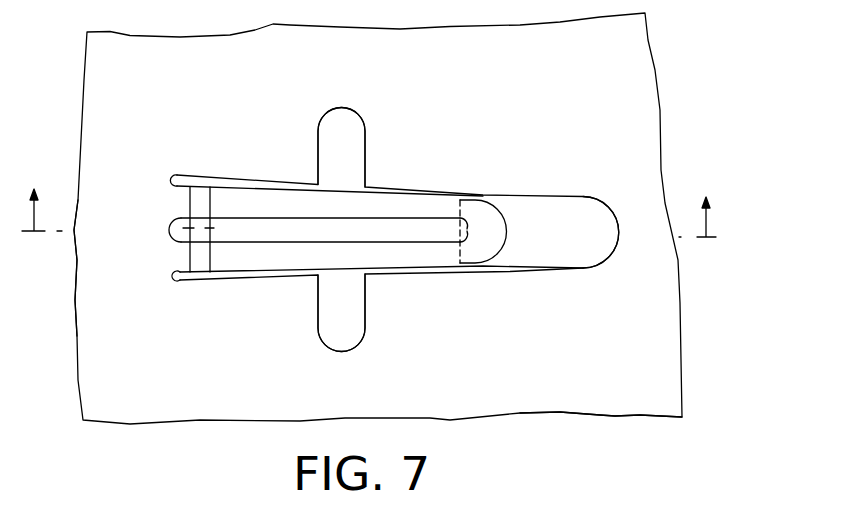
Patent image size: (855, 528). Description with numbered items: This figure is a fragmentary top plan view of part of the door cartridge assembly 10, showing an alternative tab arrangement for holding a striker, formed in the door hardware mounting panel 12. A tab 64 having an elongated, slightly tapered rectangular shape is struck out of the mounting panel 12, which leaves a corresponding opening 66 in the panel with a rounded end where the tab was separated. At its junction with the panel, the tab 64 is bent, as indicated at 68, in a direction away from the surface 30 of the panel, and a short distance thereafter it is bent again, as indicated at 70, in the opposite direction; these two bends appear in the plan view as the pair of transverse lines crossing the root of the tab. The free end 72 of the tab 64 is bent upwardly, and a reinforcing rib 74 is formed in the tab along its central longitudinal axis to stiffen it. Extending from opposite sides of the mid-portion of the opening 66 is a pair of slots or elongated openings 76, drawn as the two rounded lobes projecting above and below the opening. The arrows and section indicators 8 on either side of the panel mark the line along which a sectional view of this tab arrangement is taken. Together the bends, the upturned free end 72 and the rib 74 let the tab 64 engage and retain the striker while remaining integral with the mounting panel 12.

The section line 8- 8 is at (369, 235).
The door cartridge assembly 10 is at (659, 73).
The door hardware mounting panel 12 is at (565, 413).
The surface 30 is at (88, 354).
The tab 64 is at (398, 203).
The opening 66 is at (563, 272).
The bend 68 is at (189, 260).
The bend 70 is at (210, 203).
The free end 72 is at (488, 218).
The reinforcing rib 74 is at (257, 233).
The slots or elongated openings 76 is at (366, 122).